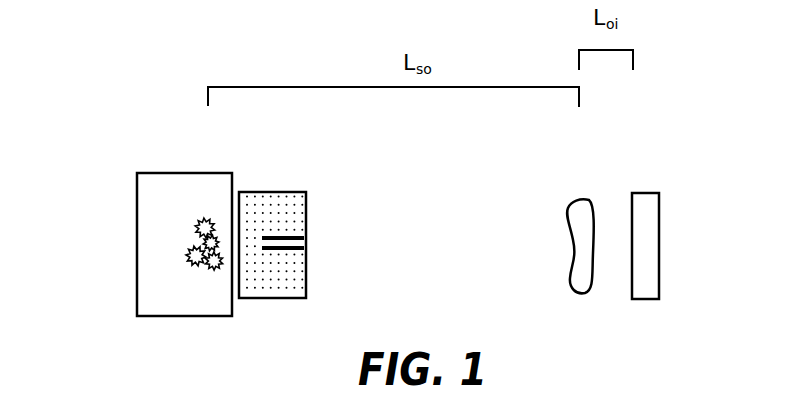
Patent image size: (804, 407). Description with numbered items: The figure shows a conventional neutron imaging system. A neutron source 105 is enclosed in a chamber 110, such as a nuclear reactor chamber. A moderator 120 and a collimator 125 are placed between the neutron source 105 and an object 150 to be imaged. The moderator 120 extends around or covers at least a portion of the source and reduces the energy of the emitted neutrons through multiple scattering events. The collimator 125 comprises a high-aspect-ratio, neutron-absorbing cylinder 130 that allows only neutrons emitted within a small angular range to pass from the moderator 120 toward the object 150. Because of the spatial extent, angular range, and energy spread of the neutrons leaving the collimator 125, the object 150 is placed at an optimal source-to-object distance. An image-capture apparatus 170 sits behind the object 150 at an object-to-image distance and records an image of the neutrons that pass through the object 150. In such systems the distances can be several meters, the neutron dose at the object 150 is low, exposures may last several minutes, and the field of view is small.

The neutron source 105 is at (195, 230).
The chamber 110 is at (137, 263).
The moderator 120 is at (262, 192).
The collimator 125 is at (296, 237).
The neutron-absorbing cylinder 130 is at (308, 243).
The object 150 is at (577, 200).
The image-capture apparatus 170 is at (645, 192).